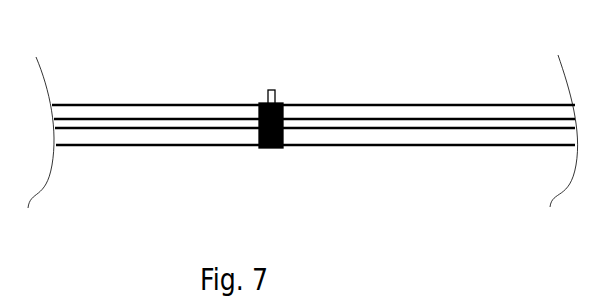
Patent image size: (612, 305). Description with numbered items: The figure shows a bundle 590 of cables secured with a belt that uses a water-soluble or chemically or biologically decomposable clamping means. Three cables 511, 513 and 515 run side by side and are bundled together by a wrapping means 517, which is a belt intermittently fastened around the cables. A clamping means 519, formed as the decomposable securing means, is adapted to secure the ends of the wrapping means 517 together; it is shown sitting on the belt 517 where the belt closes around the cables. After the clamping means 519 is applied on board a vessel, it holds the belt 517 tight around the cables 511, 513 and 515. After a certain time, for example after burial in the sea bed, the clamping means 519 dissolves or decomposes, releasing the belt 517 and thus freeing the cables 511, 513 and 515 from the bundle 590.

The laminate / stacked film structure 590 is at (113, 97).
The cable 511 is at (358, 110).
The cable 513 is at (447, 123).
The cable 515 is at (492, 137).
The wrapping means 517 is at (262, 148).
The clamping means 519 is at (271, 88).